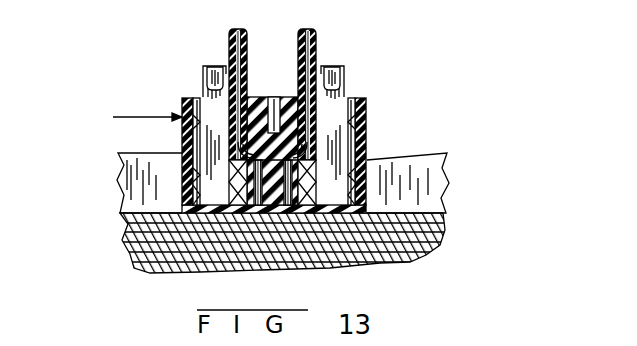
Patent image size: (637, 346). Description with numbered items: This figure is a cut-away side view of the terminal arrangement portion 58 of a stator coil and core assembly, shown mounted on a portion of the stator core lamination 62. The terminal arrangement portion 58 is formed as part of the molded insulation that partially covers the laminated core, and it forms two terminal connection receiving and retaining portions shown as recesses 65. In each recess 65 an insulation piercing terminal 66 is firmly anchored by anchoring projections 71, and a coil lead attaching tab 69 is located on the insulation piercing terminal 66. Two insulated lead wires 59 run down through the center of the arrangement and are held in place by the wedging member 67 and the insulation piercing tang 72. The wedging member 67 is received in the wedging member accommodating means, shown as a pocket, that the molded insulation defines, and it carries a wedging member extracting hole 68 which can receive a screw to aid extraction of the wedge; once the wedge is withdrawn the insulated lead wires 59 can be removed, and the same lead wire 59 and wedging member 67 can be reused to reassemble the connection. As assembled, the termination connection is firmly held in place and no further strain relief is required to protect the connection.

The terminal arrangement portion 58 is at (133, 118).
The insulated lead wire 59 is at (258, 42).
The stator core lamination 62 is at (420, 247).
The recess 65 is at (182, 184).
The insulation piercing terminal 66 is at (212, 100).
The wedging member 67 is at (258, 96).
The wedging member extracting hole 68 is at (272, 98).
The coil lead attaching tab 69 is at (220, 67).
The anchoring projection 71 is at (192, 166).
The insulation piercing tang 72 is at (198, 96).